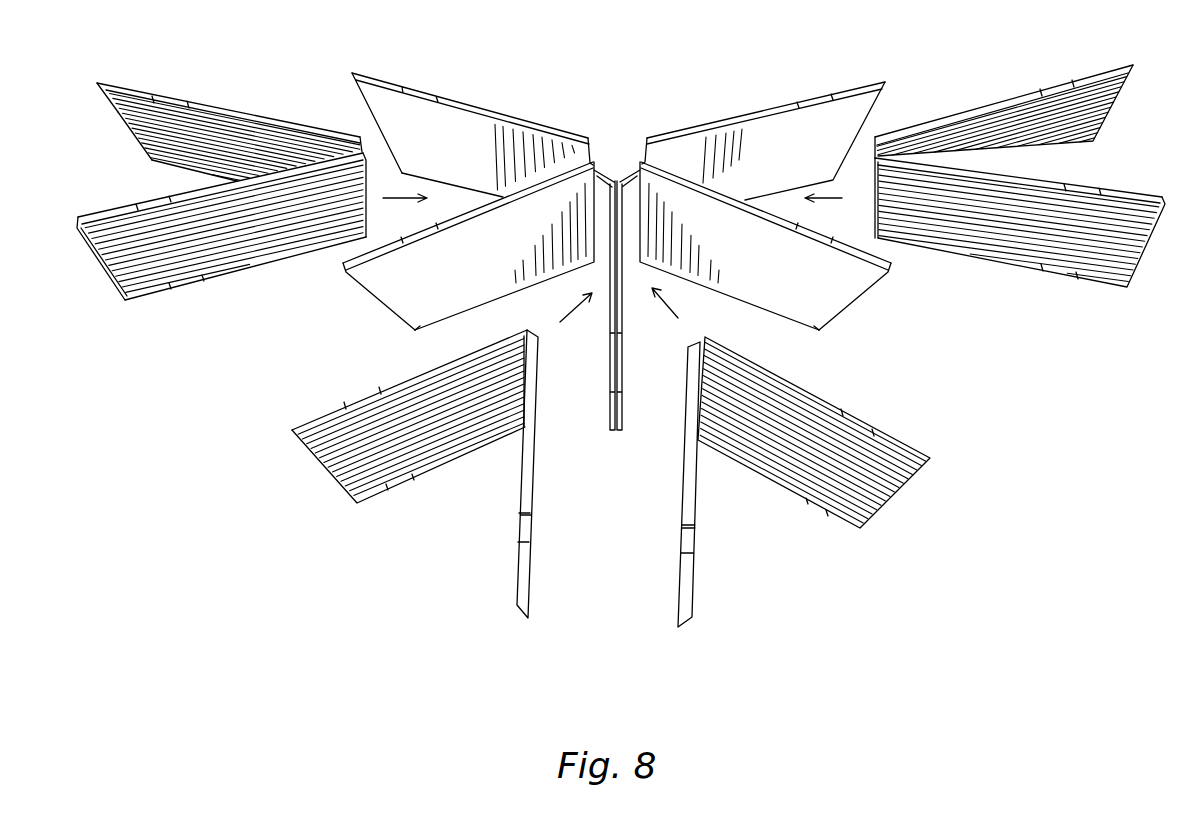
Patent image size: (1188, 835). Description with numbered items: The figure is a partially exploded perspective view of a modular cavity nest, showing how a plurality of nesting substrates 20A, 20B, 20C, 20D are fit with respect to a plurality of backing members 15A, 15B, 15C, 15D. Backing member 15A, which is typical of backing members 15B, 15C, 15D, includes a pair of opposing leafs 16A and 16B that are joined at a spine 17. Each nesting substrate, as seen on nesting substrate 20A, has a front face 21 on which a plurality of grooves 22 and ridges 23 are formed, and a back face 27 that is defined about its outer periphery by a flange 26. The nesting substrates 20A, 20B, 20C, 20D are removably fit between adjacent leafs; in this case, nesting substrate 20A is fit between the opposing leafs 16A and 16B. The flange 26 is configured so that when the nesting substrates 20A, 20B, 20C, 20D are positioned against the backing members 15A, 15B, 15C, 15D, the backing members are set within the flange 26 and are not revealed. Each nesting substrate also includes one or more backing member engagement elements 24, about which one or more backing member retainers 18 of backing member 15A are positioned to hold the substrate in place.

The backing member 15A is at (464, 222).
The backing member 15B is at (386, 343).
The backing member 15C is at (876, 344).
The backing member 15D is at (691, 54).
The leaf 16A is at (365, 72).
The leaf 16B is at (347, 268).
The spine 17 is at (592, 147).
The backing member retainer 18 is at (427, 92).
The nesting substrate 20A is at (210, 190).
The nesting substrate 20B is at (411, 585).
The nesting substrate 20C is at (780, 565).
The nesting substrate 20D is at (984, 52).
The front face 21 is at (100, 102).
The grooves 22 is at (128, 130).
The ridges 23 is at (153, 157).
The backing member engagement element 24 is at (168, 100).
The flange 26 is at (132, 302).
The back face 27 is at (235, 253).